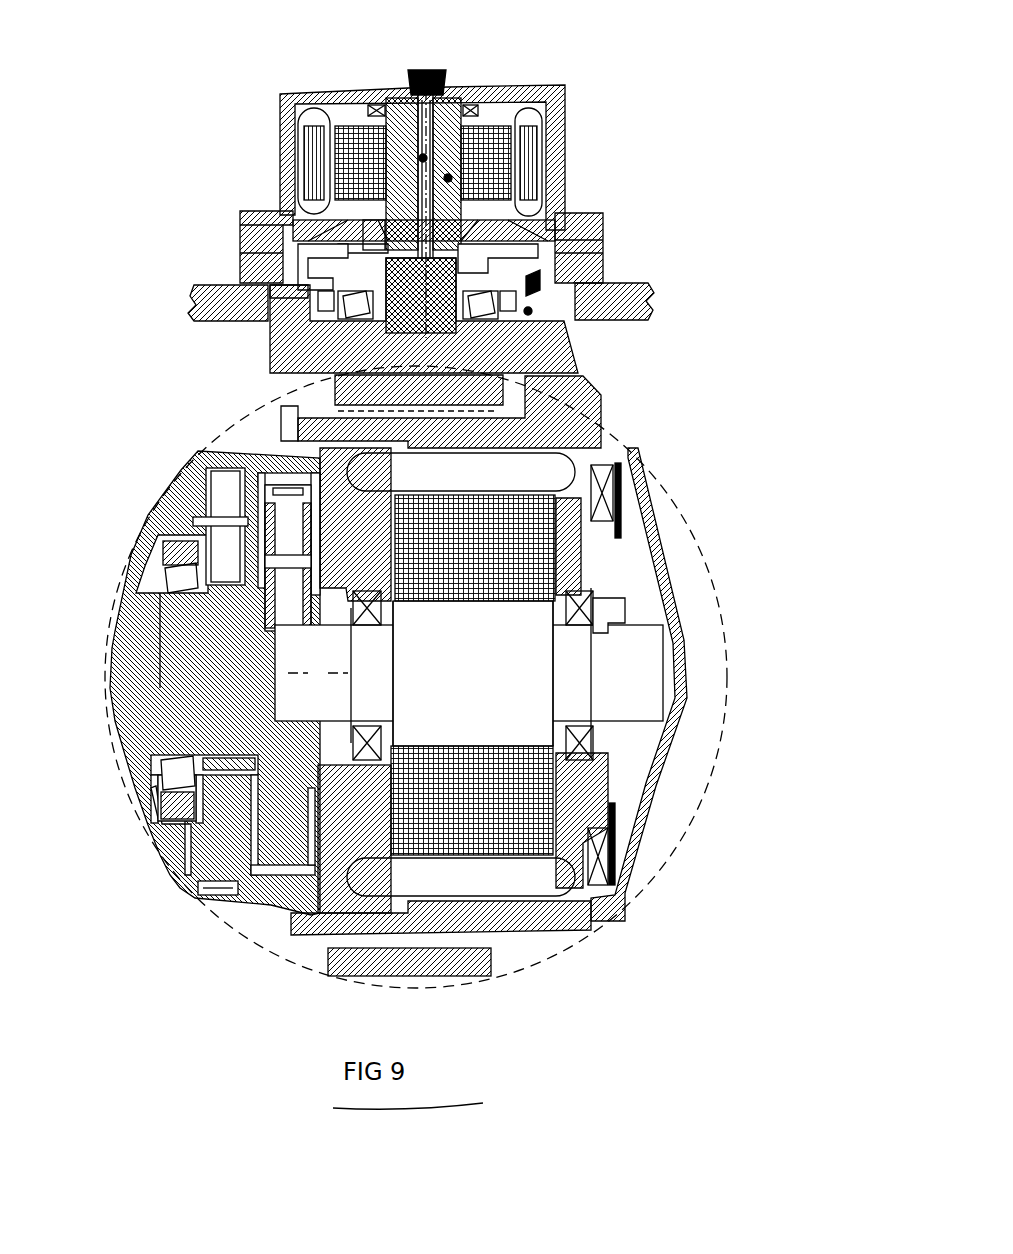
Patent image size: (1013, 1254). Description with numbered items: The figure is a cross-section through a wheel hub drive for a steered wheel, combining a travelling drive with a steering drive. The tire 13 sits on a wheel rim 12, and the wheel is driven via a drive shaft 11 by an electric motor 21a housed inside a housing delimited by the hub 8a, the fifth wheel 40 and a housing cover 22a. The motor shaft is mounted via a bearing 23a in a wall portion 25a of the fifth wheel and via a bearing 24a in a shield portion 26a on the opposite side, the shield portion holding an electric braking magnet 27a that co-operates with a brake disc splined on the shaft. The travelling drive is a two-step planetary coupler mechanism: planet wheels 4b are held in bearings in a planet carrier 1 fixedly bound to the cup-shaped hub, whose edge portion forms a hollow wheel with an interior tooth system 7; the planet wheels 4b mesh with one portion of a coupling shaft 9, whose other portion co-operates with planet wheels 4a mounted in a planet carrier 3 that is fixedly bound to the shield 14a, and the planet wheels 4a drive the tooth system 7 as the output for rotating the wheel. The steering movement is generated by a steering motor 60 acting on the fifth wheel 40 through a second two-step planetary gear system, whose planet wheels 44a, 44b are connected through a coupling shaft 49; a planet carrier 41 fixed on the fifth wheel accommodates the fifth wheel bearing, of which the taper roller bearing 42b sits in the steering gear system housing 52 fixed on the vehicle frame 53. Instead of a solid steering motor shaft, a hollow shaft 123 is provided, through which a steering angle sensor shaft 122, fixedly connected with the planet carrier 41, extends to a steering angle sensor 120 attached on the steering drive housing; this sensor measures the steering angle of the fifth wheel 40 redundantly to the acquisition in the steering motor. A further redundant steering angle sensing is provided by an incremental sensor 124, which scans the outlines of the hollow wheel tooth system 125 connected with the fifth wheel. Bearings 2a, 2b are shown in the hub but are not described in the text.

The planet carrier 1 is at (135, 680).
The bearing 2a is at (150, 785).
The seal 2b is at (182, 887).
The planet carrier 3 is at (180, 860).
The planet wheels 4a is at (208, 437).
The planet wheels 4b is at (592, 202).
The interior tooth system 7 is at (213, 897).
The hub 8a is at (163, 475).
The coupling shaft 9 is at (257, 900).
The drive shaft 11 is at (565, 660).
The wheel rim 12 is at (298, 940).
The tire 13 is at (483, 970).
The shield 14a is at (323, 970).
The electric motor 21a is at (475, 687).
The housing cover 22a is at (656, 560).
The bearing 23a is at (268, 905).
The bearing 24a is at (560, 588).
The wall portion 25a is at (360, 835).
The shield portion 26a is at (577, 797).
The electric braking magnet 27a is at (595, 497).
The fifth wheel 40 is at (585, 378).
The planet carrier 41 is at (596, 222).
The roller bearing 42b is at (350, 212).
The planet wheels 44a is at (246, 276).
The planet wheels 44b is at (245, 212).
The coupling shaft 49 is at (517, 257).
The steering gear system housing 52 is at (247, 250).
The vehicle frame 53 is at (645, 288).
The steering motor 60 is at (556, 116).
The steering angle sensor 120 is at (440, 73).
The steering angle sensor shaft 122 is at (419, 150).
The hollow shaft 123 is at (444, 170).
The incremental sensor 124 is at (590, 272).
The hollow wheel tooth system 125 is at (524, 303).